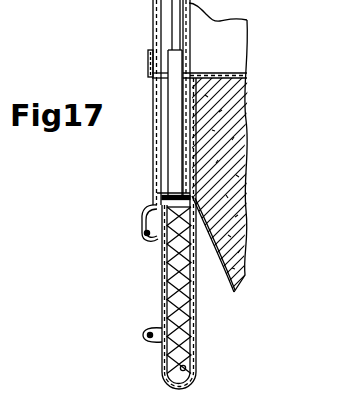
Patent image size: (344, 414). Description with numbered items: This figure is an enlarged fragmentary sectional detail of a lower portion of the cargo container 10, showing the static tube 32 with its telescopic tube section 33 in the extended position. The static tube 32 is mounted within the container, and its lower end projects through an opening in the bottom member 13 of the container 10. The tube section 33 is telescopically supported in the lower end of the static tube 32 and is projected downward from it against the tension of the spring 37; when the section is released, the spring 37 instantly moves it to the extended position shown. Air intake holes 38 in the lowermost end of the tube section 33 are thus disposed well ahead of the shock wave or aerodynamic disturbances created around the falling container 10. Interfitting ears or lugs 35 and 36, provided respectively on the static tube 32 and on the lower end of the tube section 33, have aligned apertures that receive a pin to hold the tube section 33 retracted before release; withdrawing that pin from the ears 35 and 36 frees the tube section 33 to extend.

The cargo container 10 is at (152, 13).
The static tube 32 is at (180, 40).
The bottom member 13 is at (237, 291).
The tube section 33 is at (163, 283).
The spring 37 is at (163, 265).
The ear 35 is at (144, 231).
The ear 36 is at (151, 330).
The air intake holes 38 is at (161, 355).